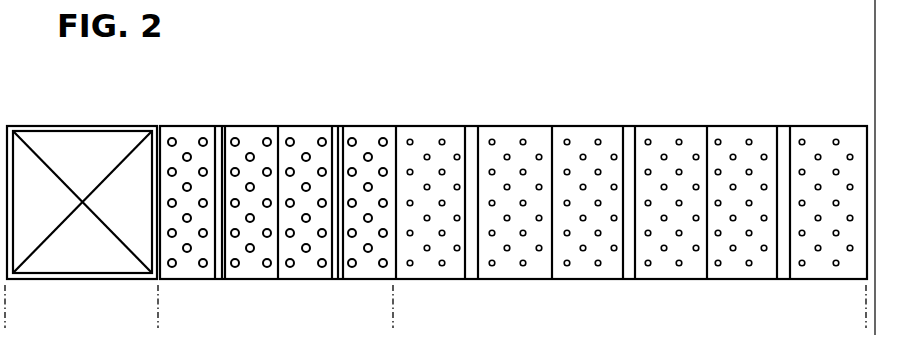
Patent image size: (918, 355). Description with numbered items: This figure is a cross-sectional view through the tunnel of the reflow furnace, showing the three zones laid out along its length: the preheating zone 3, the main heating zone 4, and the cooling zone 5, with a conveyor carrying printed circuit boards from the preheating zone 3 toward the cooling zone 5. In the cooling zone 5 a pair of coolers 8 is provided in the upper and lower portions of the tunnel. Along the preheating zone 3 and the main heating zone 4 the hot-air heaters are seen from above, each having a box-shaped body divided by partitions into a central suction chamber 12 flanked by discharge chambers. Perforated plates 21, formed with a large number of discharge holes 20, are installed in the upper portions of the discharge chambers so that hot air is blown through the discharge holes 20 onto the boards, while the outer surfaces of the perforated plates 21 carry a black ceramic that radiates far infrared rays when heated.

The cooler 8 is at (82, 143).
The discharge holes 20 is at (173, 138).
The perforated plates 21 is at (305, 138).
The suction chamber 12 is at (338, 137).
The cooling zone 5 is at (158, 320).
The main heating zone 4 is at (393, 320).
The preheating zone 3 is at (393, 320).